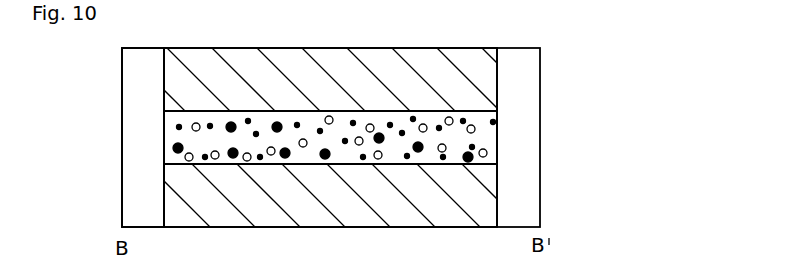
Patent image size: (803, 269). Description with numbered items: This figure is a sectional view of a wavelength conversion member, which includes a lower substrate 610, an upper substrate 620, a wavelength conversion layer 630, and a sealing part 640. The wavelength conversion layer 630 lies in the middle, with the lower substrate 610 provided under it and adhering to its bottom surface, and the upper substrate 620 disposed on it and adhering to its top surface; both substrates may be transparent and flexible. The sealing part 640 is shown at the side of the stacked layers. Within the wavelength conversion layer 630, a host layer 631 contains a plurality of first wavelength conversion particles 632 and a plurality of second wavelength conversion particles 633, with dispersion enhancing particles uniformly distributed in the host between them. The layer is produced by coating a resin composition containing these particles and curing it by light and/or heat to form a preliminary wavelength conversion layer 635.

The lower substrate 610 is at (483, 209).
The upper substrate 620 is at (485, 79).
The wavelength conversion layer 630 is at (411, 147).
The host layer 631 is at (490, 134).
The first wavelength conversion particles 632 is at (497, 117).
The second wavelength conversion particles 633 is at (472, 158).
The preliminary wavelength conversion layer 635 is at (488, 153).
The sealing part 640 is at (136, 67).